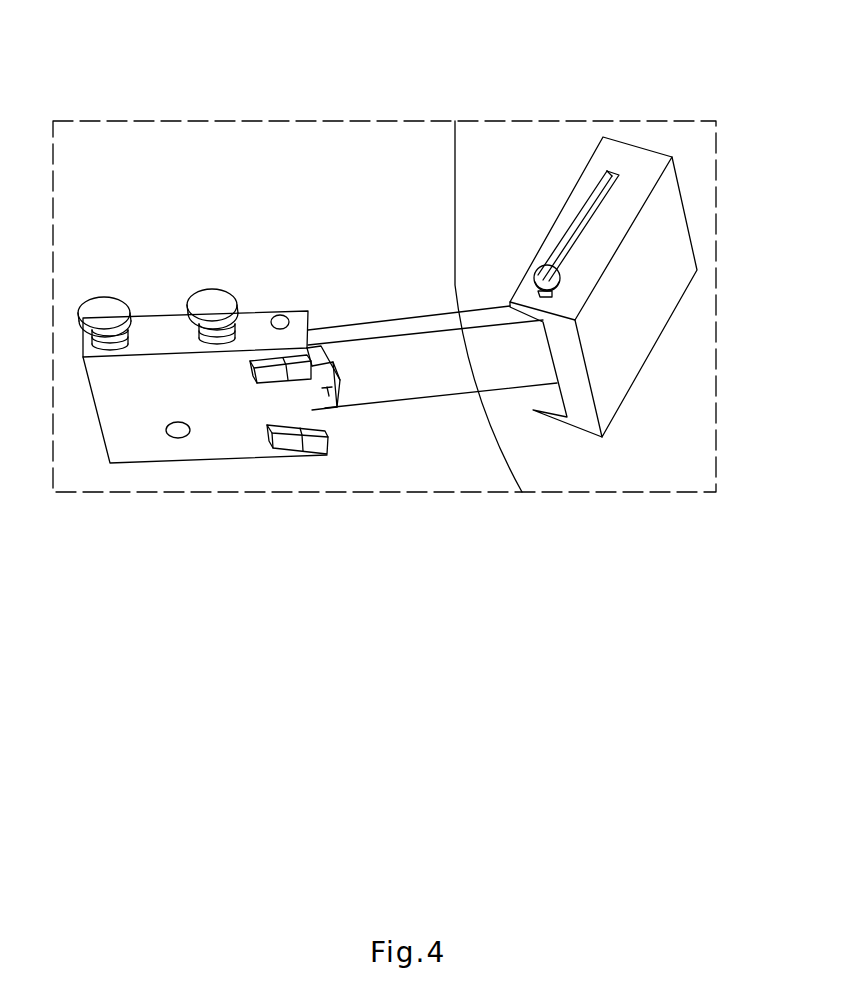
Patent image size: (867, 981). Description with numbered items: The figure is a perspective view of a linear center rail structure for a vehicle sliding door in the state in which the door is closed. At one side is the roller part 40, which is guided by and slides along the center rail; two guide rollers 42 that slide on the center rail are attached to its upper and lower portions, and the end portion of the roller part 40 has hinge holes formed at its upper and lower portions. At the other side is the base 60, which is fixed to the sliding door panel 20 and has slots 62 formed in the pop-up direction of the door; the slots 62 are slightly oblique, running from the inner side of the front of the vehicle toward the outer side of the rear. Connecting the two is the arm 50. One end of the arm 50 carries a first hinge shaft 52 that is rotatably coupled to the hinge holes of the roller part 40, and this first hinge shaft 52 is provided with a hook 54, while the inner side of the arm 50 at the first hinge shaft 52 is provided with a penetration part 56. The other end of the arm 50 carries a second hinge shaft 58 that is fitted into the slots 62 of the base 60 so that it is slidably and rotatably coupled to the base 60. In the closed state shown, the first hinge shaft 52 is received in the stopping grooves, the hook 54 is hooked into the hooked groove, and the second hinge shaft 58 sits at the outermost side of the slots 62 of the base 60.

The sliding door panel 20 is at (520, 138).
The roller part 40 is at (155, 327).
The guide rollers 42 is at (105, 302).
The arm 50 is at (418, 388).
The first hinge shaft 52 is at (280, 316).
The hook 54 is at (312, 366).
The penetration part 56 is at (322, 393).
The second hinge shaft 58 is at (540, 278).
The base 60 is at (623, 217).
The slots 62 is at (578, 250).